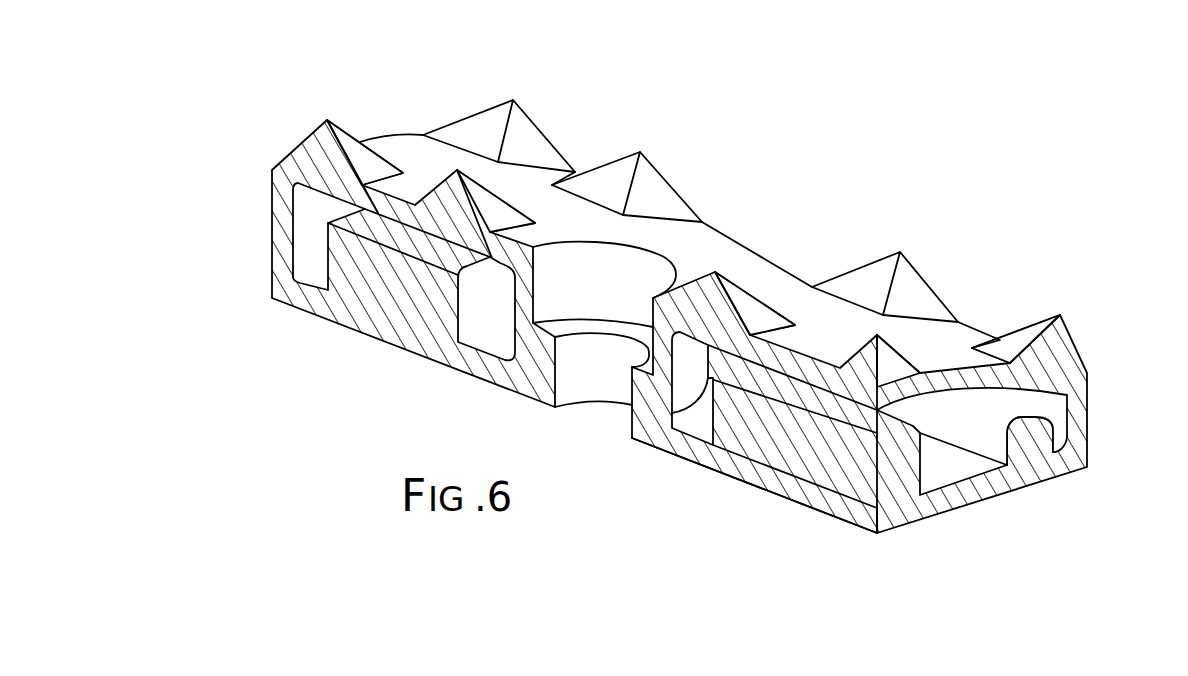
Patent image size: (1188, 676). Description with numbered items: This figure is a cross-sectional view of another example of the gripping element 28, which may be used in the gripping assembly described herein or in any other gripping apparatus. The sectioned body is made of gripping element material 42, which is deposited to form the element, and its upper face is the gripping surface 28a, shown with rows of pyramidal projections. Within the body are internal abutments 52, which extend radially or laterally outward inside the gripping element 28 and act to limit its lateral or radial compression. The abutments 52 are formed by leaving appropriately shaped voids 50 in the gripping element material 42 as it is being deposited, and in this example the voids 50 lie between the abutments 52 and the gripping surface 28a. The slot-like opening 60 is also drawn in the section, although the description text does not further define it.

The gripping element 28 is at (726, 313).
The gripping surface 28a is at (663, 190).
The gripping element material 42 is at (812, 473).
The voids 50 is at (698, 422).
The internal abutments 52 is at (393, 243).
The slot 60 is at (500, 340).